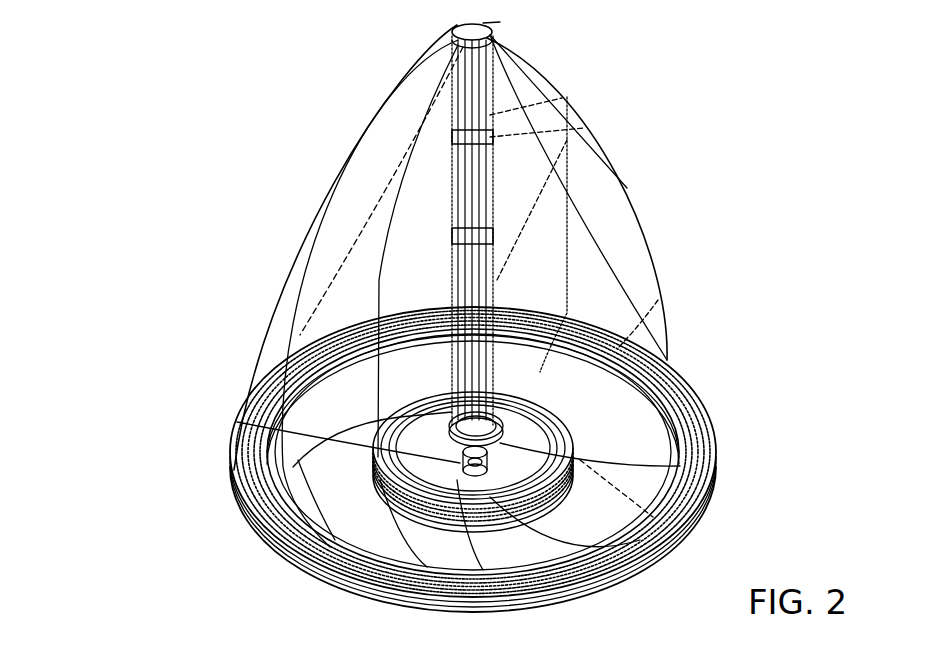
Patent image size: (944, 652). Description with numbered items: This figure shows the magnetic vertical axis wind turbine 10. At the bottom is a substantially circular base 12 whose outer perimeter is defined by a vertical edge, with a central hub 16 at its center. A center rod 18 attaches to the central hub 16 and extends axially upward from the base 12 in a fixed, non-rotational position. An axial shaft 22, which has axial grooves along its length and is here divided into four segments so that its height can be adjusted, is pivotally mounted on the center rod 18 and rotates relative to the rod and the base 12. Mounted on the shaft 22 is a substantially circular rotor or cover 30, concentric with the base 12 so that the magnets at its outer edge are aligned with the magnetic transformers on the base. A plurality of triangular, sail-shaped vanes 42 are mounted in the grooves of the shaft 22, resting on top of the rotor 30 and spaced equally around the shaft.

The magnetic vertical axis wind turbine 10 is at (645, 130).
The base 12 is at (700, 534).
The central hub 16 is at (237, 422).
The center rod 18 is at (570, 432).
The axial shaft 22 is at (487, 82).
The rotor 30 is at (717, 440).
The vanes 42 is at (613, 232).